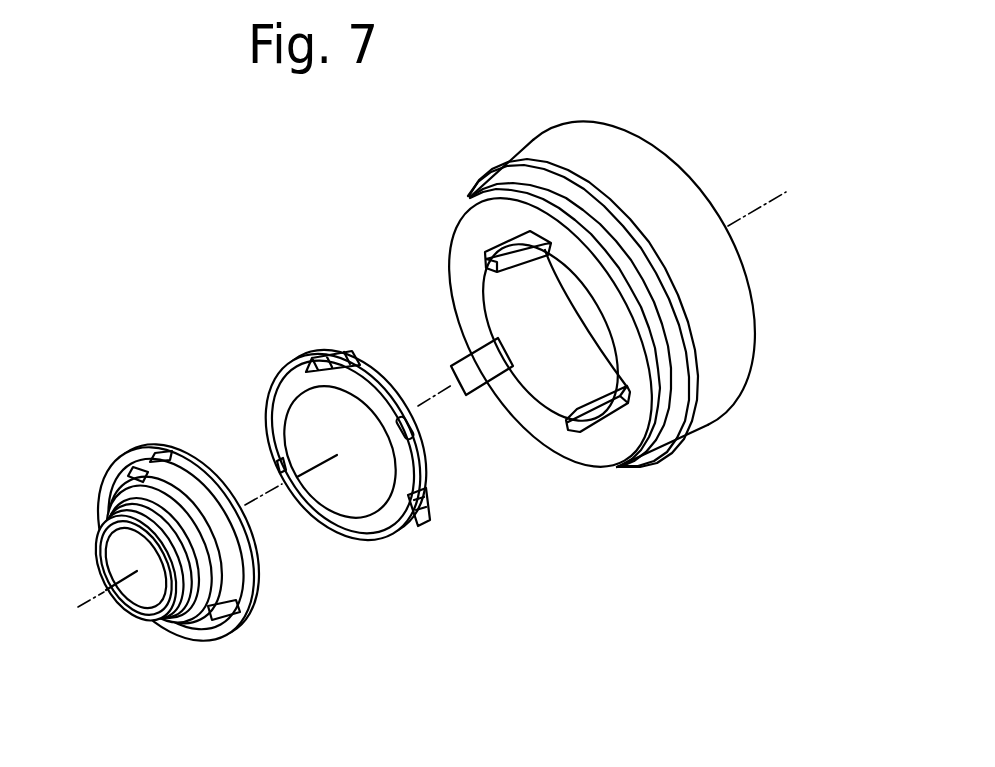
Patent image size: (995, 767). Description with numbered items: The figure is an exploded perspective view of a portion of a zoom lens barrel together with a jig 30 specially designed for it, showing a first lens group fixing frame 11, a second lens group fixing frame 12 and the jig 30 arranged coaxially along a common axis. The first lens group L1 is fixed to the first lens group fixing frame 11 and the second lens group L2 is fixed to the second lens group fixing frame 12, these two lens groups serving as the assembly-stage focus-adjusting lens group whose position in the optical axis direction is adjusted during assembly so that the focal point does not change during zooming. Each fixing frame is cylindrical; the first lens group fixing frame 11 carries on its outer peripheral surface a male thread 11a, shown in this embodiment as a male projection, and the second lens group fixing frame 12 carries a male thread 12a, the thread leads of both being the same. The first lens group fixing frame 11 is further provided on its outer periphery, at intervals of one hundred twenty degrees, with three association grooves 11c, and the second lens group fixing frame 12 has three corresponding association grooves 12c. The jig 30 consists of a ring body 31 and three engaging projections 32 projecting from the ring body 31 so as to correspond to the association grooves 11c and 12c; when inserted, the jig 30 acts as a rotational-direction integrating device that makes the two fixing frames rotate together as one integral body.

The jig 30 is at (578, 310).
The ring body 31 is at (672, 195).
The engaging projections 32 is at (487, 257).
The first lens group fixing frame 11 is at (329, 445).
The male thread 11a is at (417, 427).
The association grooves 11c is at (337, 352).
The second lens group fixing frame 12 is at (172, 526).
The male thread 12a is at (212, 480).
The association grooves 12c is at (166, 456).
The first lens group L1 is at (353, 505).
The second lens group L2 is at (128, 590).